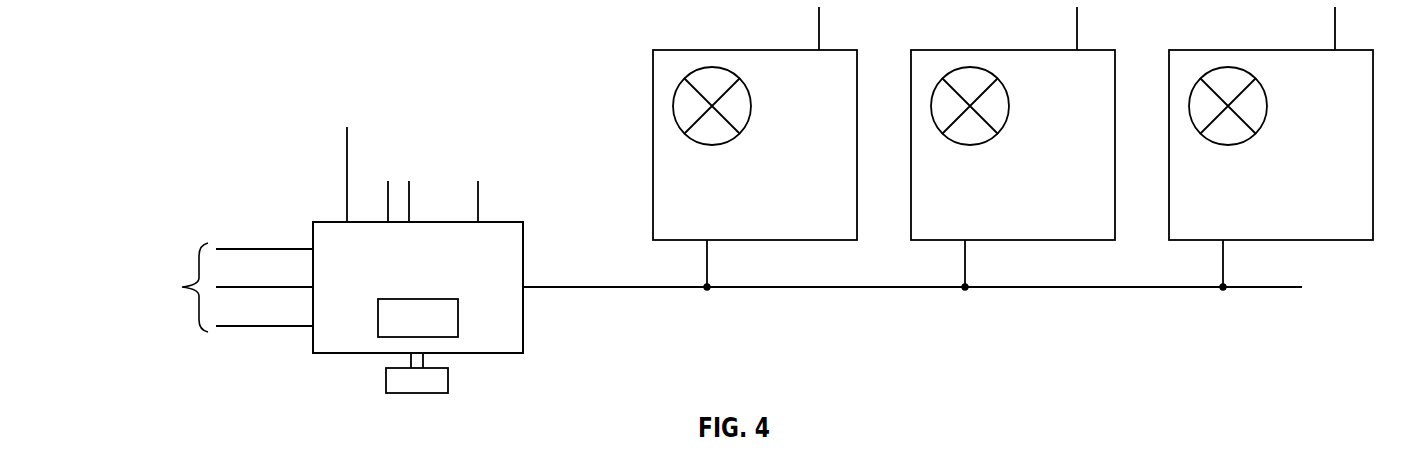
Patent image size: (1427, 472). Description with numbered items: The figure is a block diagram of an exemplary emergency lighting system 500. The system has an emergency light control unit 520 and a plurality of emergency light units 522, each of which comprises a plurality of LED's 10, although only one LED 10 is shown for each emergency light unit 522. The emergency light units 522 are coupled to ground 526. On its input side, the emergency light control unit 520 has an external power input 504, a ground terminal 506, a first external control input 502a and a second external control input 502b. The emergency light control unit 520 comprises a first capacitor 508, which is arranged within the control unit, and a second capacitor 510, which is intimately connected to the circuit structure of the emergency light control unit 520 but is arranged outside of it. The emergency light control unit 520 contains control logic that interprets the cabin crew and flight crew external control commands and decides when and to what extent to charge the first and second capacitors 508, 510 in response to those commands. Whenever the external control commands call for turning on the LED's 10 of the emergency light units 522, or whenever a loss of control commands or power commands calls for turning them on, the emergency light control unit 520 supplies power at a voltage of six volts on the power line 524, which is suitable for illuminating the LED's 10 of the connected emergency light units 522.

The emergency lighting system 500 is at (169, 34).
The first external control input 502a is at (218, 287).
The second external control input 502b is at (345, 173).
The external power input 504 is at (398, 183).
The ground terminal 506 is at (480, 200).
The first capacitor 508 is at (418, 299).
The second capacitor 510 is at (449, 378).
The emergency light control unit 520 is at (357, 356).
The emergency light unit 522 is at (700, 50).
The power line 524 is at (583, 287).
The ground 526 is at (817, 35).
The LED 10 is at (753, 106).